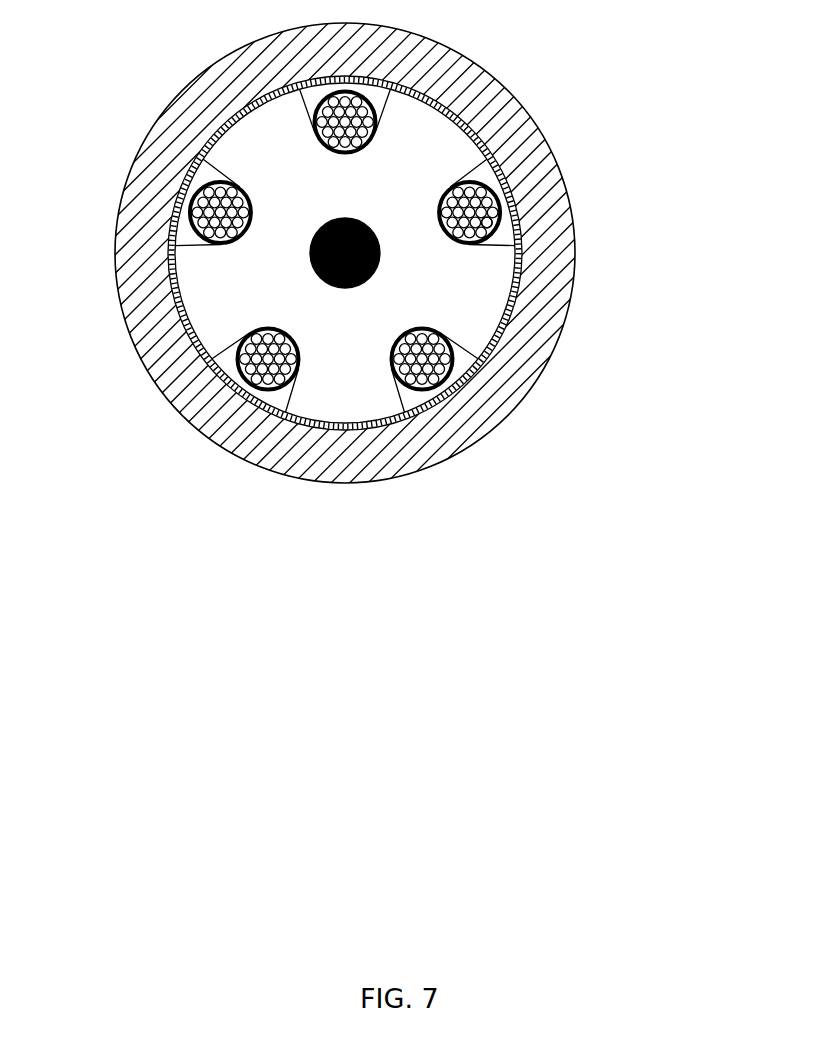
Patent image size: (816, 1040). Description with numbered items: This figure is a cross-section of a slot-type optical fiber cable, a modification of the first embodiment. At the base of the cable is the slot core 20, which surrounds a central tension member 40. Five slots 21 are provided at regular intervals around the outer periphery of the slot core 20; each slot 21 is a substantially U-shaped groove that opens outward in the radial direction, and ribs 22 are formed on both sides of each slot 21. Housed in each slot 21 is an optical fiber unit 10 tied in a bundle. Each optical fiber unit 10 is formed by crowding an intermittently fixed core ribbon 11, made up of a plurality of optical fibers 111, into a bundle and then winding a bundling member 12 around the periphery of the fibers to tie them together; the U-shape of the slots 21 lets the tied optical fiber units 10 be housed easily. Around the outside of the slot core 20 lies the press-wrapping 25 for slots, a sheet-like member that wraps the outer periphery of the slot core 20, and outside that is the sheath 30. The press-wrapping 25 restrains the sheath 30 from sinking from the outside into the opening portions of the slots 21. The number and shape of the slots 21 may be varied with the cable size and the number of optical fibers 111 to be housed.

The optical fiber unit 10 is at (467, 241).
The intermittently fixed core ribbon 11 is at (488, 227).
The optical fiber 111 is at (575, 237).
The bundling member 12 is at (496, 194).
The slot core 20 is at (228, 122).
The slot 21 is at (500, 160).
The rib 22 is at (448, 145).
The press-wrapping for slots 25 is at (173, 292).
The sheath 30 is at (213, 433).
The tension member 40 is at (310, 264).